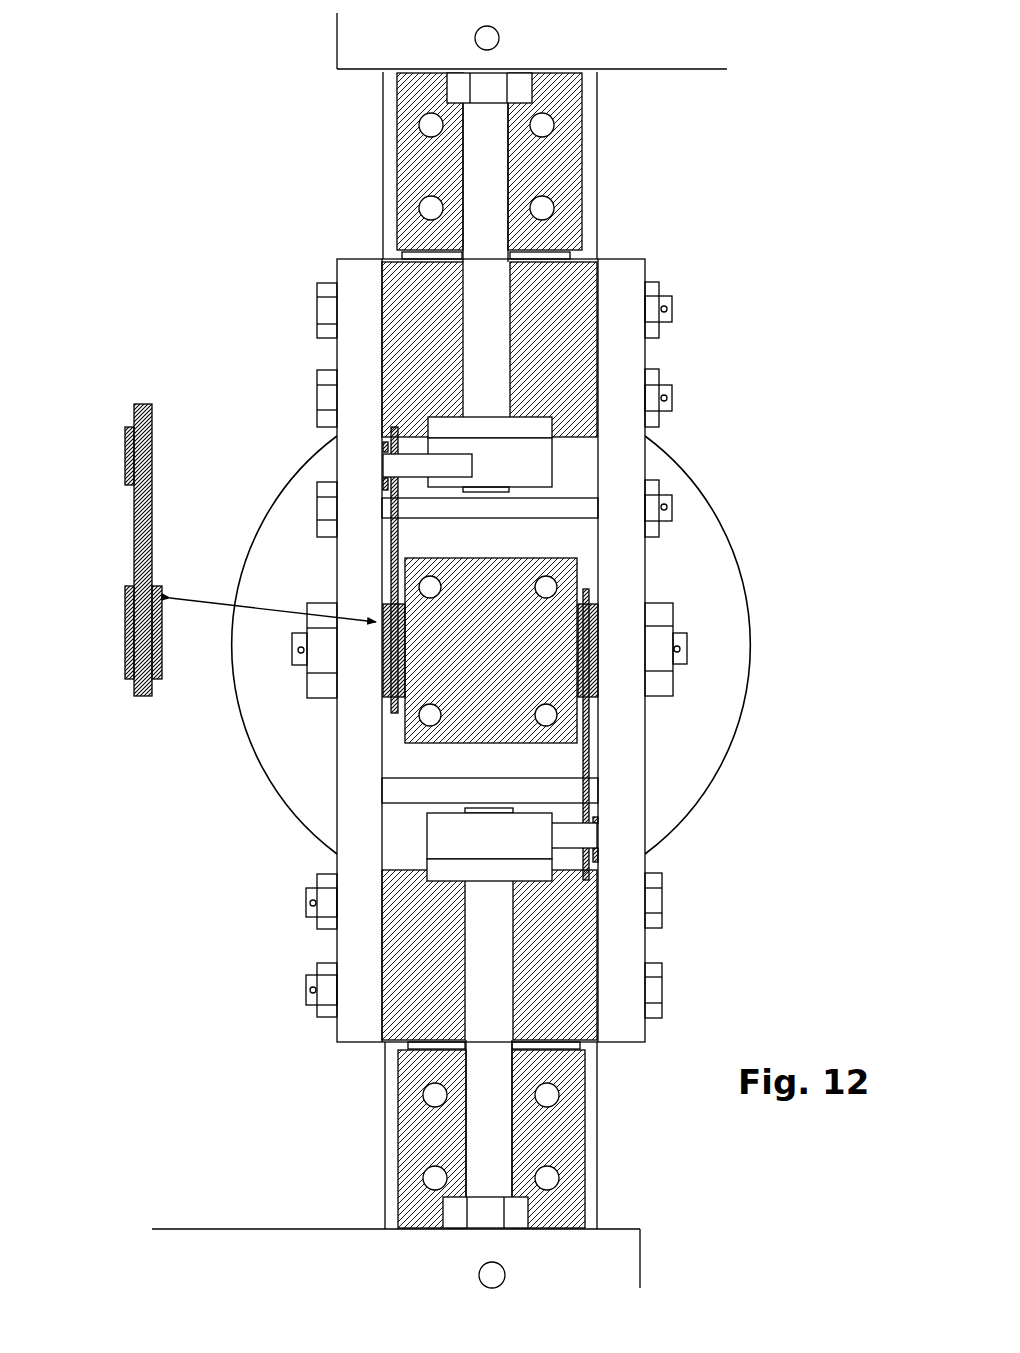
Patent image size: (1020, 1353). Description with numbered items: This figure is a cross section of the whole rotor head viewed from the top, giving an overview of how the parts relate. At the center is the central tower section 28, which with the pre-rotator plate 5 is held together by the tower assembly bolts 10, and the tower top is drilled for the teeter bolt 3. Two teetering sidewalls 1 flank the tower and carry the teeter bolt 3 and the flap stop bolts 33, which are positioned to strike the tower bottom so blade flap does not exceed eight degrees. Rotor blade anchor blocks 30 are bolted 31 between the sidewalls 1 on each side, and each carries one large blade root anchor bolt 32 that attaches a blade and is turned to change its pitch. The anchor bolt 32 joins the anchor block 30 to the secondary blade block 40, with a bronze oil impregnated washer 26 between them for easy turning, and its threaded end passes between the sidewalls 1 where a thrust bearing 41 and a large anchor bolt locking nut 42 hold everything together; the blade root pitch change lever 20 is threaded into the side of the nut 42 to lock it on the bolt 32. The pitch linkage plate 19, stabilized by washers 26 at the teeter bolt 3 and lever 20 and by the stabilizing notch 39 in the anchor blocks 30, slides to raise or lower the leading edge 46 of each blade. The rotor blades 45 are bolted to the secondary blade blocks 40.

The teetering sidewalls 1 is at (360, 932).
The teeter bolt 3 is at (285, 658).
The pre-rotator plate 5 is at (239, 548).
The tower assembly bolts 10 is at (428, 716).
The pitch linkage plate 19 is at (125, 546).
The blade root pitch change lever 20 is at (417, 462).
The bronze oil impregnated washers 26 is at (393, 253).
The central tower section 28 is at (452, 659).
The rotor blade anchor blocks 30 is at (404, 363).
The anchor block bolts 31 is at (431, 125).
The blade root anchor bolt 32 is at (483, 230).
The flap stop bolts 33 is at (305, 508).
The stabilizing notch 39 is at (378, 425).
The secondary blade block 40 is at (408, 176).
The thrust bearing 41 is at (443, 868).
The anchor bolt locking nut 42 is at (456, 843).
The rotor blades 45 is at (702, 82).
The leading edge of each blade 46 is at (328, 55).